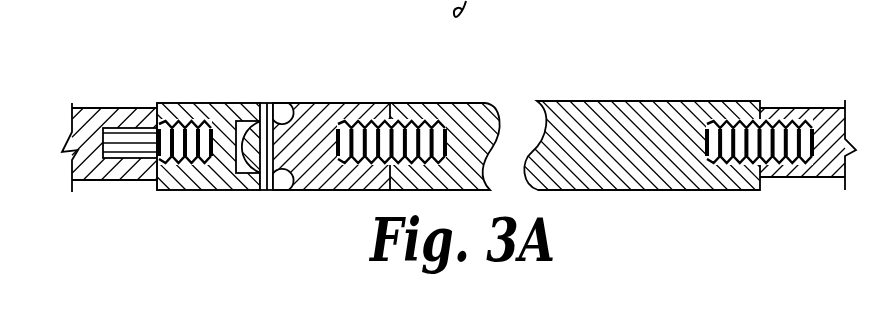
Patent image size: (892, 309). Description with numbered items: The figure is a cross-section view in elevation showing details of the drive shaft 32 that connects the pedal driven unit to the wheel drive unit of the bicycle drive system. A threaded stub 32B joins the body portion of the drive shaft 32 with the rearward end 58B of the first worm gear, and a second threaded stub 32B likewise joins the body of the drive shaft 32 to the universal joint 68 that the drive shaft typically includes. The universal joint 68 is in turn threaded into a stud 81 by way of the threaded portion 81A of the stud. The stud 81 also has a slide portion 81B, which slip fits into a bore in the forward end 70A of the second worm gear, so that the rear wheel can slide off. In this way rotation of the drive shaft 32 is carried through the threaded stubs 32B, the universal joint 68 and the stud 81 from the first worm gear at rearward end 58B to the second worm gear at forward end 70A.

The drive shaft 32 is at (589, 80).
The threaded stub 32B is at (408, 122).
The rearward extension of first worm gear 58B is at (797, 107).
The universal joint 68 is at (328, 190).
The forward portion of second worm gear 70A is at (99, 107).
The stud 81 is at (152, 125).
The threaded portion of stud 81A is at (183, 123).
The slide portion of stud 81B is at (133, 158).